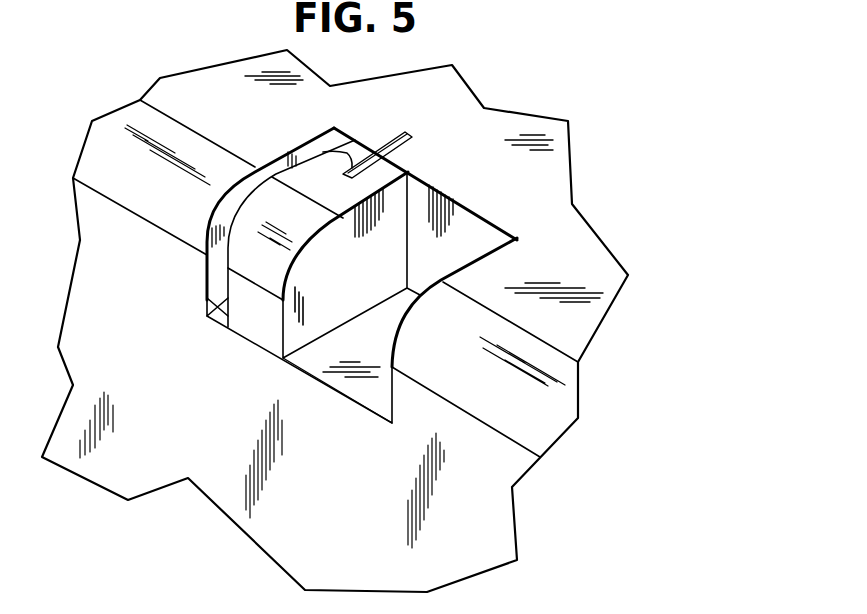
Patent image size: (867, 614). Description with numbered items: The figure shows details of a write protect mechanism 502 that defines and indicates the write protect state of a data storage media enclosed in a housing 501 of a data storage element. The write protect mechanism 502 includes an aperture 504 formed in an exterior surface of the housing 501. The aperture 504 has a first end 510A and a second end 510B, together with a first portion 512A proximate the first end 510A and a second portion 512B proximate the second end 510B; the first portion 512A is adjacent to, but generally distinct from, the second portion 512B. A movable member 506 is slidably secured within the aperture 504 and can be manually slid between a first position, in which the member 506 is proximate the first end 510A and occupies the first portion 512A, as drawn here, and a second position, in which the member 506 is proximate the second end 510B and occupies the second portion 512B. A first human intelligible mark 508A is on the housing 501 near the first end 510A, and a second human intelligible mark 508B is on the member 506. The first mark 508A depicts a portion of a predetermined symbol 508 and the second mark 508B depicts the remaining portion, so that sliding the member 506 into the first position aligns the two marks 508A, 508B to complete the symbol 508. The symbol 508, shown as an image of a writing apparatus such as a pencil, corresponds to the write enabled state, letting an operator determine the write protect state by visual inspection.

The housing 501 is at (485, 463).
The write protect mechanism 502 is at (327, 252).
The aperture 504 is at (489, 217).
The movable member 506 is at (252, 317).
The predetermined symbol 508 is at (387, 129).
The first human intelligible mark 508A is at (412, 137).
The second human intelligible mark 508B is at (318, 153).
The first end 510A is at (257, 185).
The second end 510B is at (500, 250).
The first portion 512A is at (208, 300).
The second portion 512B is at (358, 350).